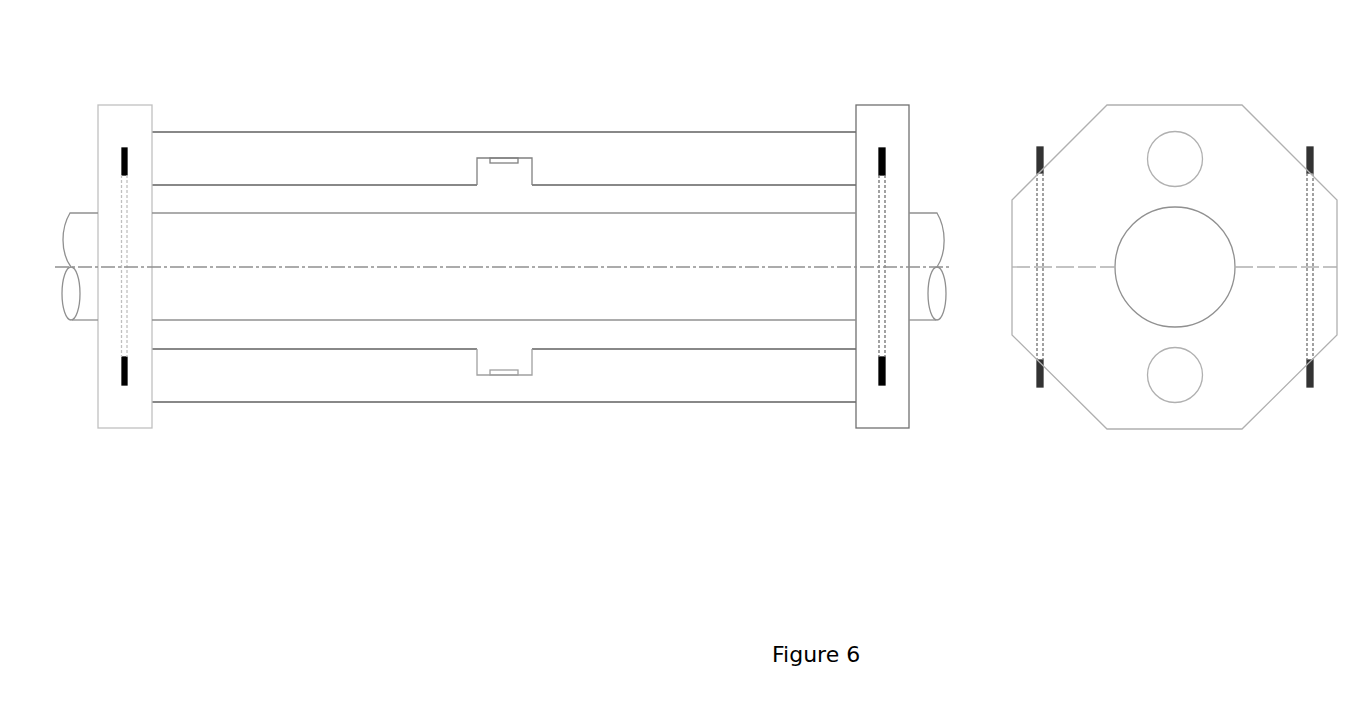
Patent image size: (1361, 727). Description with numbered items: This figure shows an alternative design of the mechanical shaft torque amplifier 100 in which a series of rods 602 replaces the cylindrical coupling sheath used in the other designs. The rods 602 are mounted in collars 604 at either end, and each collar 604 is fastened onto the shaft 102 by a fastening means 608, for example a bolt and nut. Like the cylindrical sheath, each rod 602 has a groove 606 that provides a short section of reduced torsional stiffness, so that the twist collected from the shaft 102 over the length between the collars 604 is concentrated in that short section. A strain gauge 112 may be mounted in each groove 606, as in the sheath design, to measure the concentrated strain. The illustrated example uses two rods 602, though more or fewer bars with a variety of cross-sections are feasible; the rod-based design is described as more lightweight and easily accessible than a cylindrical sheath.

The mechanical shaft torque amplifier 100 is at (378, 148).
The shaft 102 is at (1137, 267).
The strain gauge 112 is at (503, 372).
The rods 602 is at (1173, 375).
The collars 604 is at (113, 125).
The groove 606 is at (503, 143).
The fastening means 608 is at (1040, 147).